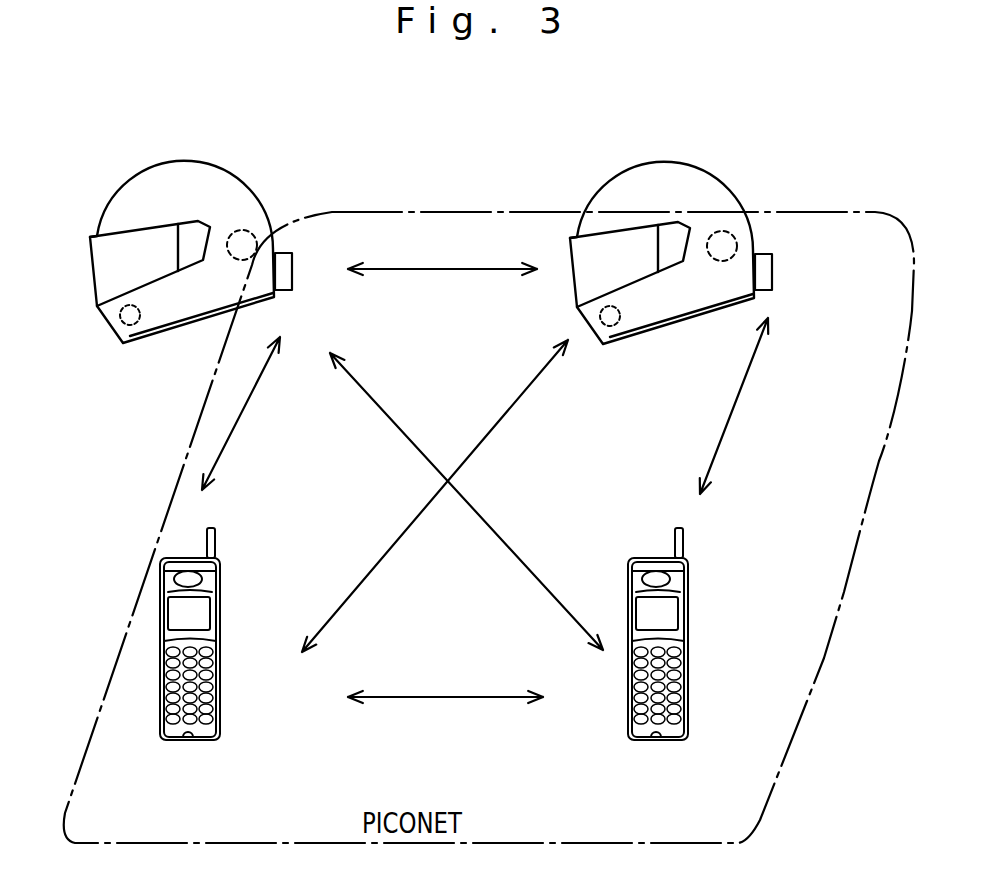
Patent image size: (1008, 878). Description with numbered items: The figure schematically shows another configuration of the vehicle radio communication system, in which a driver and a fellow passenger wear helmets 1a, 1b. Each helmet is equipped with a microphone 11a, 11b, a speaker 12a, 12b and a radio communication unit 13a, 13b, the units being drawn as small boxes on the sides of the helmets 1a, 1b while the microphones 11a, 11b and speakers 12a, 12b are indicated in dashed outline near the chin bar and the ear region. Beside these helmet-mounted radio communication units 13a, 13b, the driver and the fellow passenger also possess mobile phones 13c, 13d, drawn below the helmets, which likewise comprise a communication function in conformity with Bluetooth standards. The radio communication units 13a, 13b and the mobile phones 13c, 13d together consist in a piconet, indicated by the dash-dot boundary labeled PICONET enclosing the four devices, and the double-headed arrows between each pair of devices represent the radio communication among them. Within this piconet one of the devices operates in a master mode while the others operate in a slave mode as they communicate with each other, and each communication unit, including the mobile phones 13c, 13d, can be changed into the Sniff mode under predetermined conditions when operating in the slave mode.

The helmet 1a is at (130, 157).
The helmet 1b is at (648, 147).
The microphone 11a is at (123, 323).
The microphone 11b is at (618, 320).
The speaker 12a is at (253, 230).
The speaker 12b is at (733, 232).
The radio communication unit 13a is at (293, 290).
The radio communication unit 13b is at (773, 290).
The mobile phone 13c is at (220, 677).
The mobile phone 13d is at (688, 677).